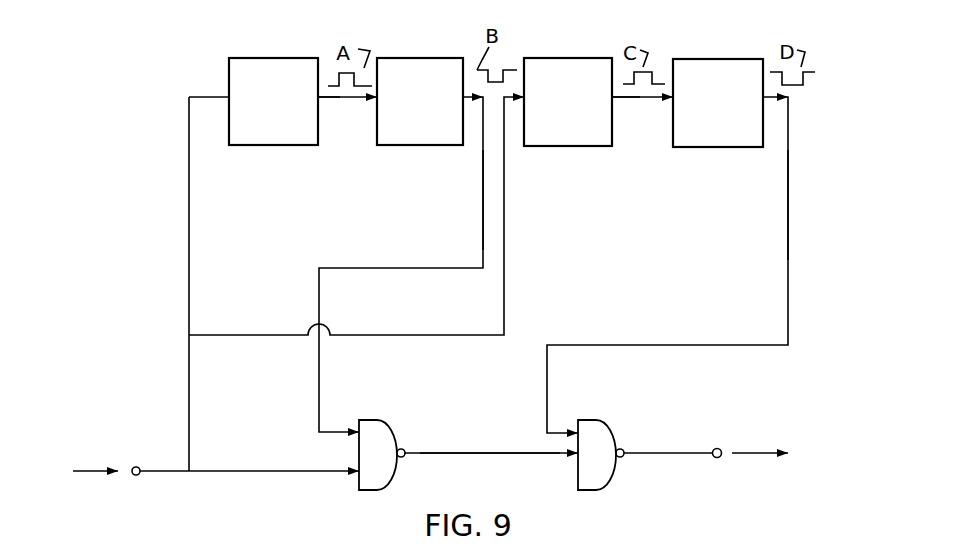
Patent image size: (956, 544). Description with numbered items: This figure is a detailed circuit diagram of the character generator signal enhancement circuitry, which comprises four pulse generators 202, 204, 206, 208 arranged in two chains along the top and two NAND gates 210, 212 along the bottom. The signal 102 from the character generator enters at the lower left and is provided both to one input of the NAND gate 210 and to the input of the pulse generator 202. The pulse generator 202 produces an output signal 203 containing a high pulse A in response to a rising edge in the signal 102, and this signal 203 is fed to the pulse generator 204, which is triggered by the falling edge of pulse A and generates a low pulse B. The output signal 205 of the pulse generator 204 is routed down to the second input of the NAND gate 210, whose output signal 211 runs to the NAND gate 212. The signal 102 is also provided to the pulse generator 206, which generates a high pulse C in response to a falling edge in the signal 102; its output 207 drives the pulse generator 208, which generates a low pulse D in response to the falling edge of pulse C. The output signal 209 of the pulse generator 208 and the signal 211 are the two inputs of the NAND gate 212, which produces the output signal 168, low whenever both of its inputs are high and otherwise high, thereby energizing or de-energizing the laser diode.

The signal from character generator 102 is at (88, 470).
The output signal 168 is at (757, 455).
The pulse generator 202 is at (293, 58).
The output signal of pulse generator 202 203 is at (327, 100).
The pulse generator 204 is at (421, 58).
The output signal of pulse generator 204 205 is at (482, 197).
The pulse generator 206 is at (563, 58).
The output signal of pulse generator 206 207 is at (627, 100).
The pulse generator 208 is at (713, 59).
The output signal of pulse generator 208 209 is at (788, 218).
The NAND gate 210 is at (380, 476).
The output signal of NAND gate 210 211 is at (478, 452).
The NAND gate 212 is at (598, 476).